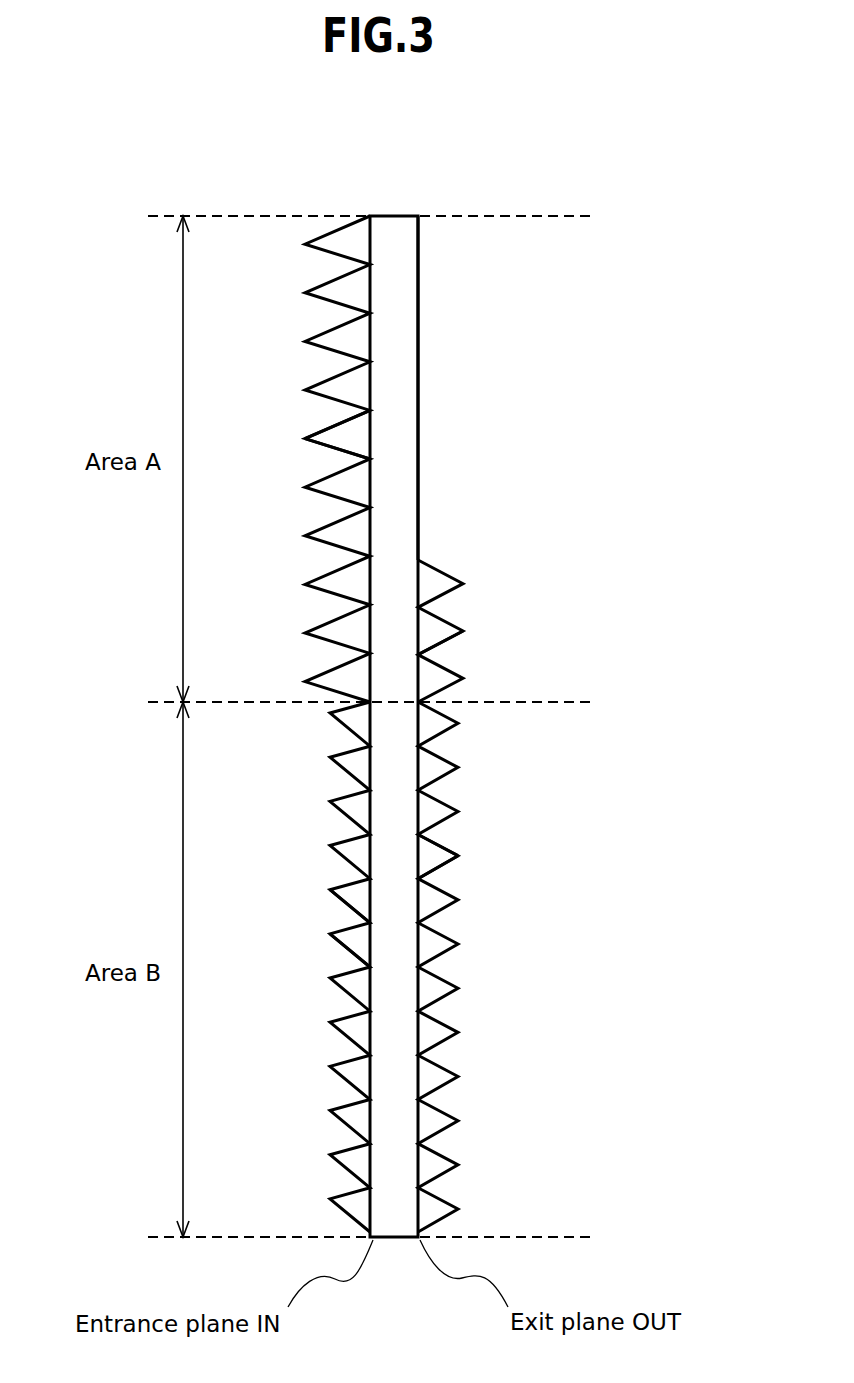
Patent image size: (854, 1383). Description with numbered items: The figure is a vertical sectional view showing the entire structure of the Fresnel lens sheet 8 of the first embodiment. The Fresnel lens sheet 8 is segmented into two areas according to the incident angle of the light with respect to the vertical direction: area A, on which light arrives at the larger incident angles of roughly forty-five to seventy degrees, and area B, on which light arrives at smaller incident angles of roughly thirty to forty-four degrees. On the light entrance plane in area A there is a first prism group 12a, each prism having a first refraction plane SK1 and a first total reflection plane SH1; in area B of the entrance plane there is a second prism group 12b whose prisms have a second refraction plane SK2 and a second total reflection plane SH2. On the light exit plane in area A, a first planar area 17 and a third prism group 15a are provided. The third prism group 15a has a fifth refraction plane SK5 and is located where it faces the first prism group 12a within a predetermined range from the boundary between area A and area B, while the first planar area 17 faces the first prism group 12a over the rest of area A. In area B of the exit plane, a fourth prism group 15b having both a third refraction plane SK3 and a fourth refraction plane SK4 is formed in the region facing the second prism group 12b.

The Fresnel lens sheet 8 is at (388, 235).
The first planar area 17 is at (419, 428).
The first prism group 12a is at (340, 295).
The first total reflection plane SH1 is at (333, 430).
The first refraction plane SK1 is at (337, 450).
The third prism group 15a is at (432, 580).
The fifth refraction plane SK5 is at (442, 640).
The second prism group 12b is at (357, 762).
The second total reflection plane SH2 is at (353, 917).
The second refraction plane SK2 is at (347, 946).
The fourth prism group 15b is at (430, 762).
The third refraction plane SK3 is at (438, 841).
The fourth refraction plane SK4 is at (447, 862).